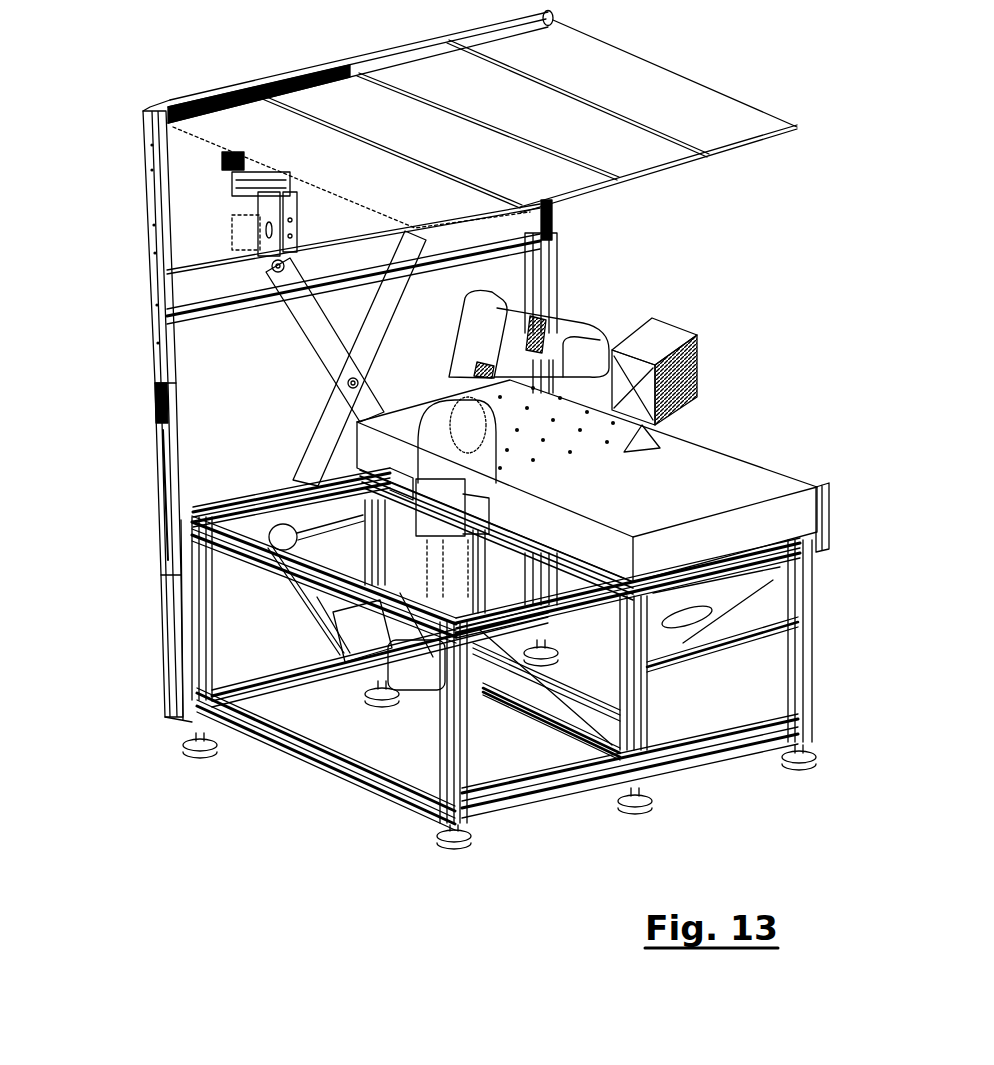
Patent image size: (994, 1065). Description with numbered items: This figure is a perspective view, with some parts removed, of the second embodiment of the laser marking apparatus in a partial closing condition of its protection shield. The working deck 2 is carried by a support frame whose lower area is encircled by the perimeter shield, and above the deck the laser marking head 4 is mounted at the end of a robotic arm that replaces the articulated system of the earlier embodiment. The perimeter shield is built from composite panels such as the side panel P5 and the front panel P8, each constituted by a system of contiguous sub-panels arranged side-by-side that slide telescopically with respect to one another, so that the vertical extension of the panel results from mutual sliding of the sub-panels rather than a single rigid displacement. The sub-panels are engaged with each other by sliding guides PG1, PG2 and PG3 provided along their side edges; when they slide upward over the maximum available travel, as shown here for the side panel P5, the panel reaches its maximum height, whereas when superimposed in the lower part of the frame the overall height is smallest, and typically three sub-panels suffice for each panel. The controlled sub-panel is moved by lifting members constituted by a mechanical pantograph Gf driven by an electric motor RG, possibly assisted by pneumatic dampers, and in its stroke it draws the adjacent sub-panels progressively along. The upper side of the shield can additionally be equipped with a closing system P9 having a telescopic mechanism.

The composite side panel P5 is at (126, 98).
The closing system P9 is at (324, 103).
The sliding guide PG1 is at (153, 166).
The sliding guide PG2 is at (157, 427).
The sliding guide PG3 is at (163, 630).
The electric motor RG is at (237, 192).
The mechanical pantograph Gf is at (333, 343).
The laser marking head 4 is at (663, 330).
The working deck 2 is at (705, 470).
The front panel P8 is at (828, 497).